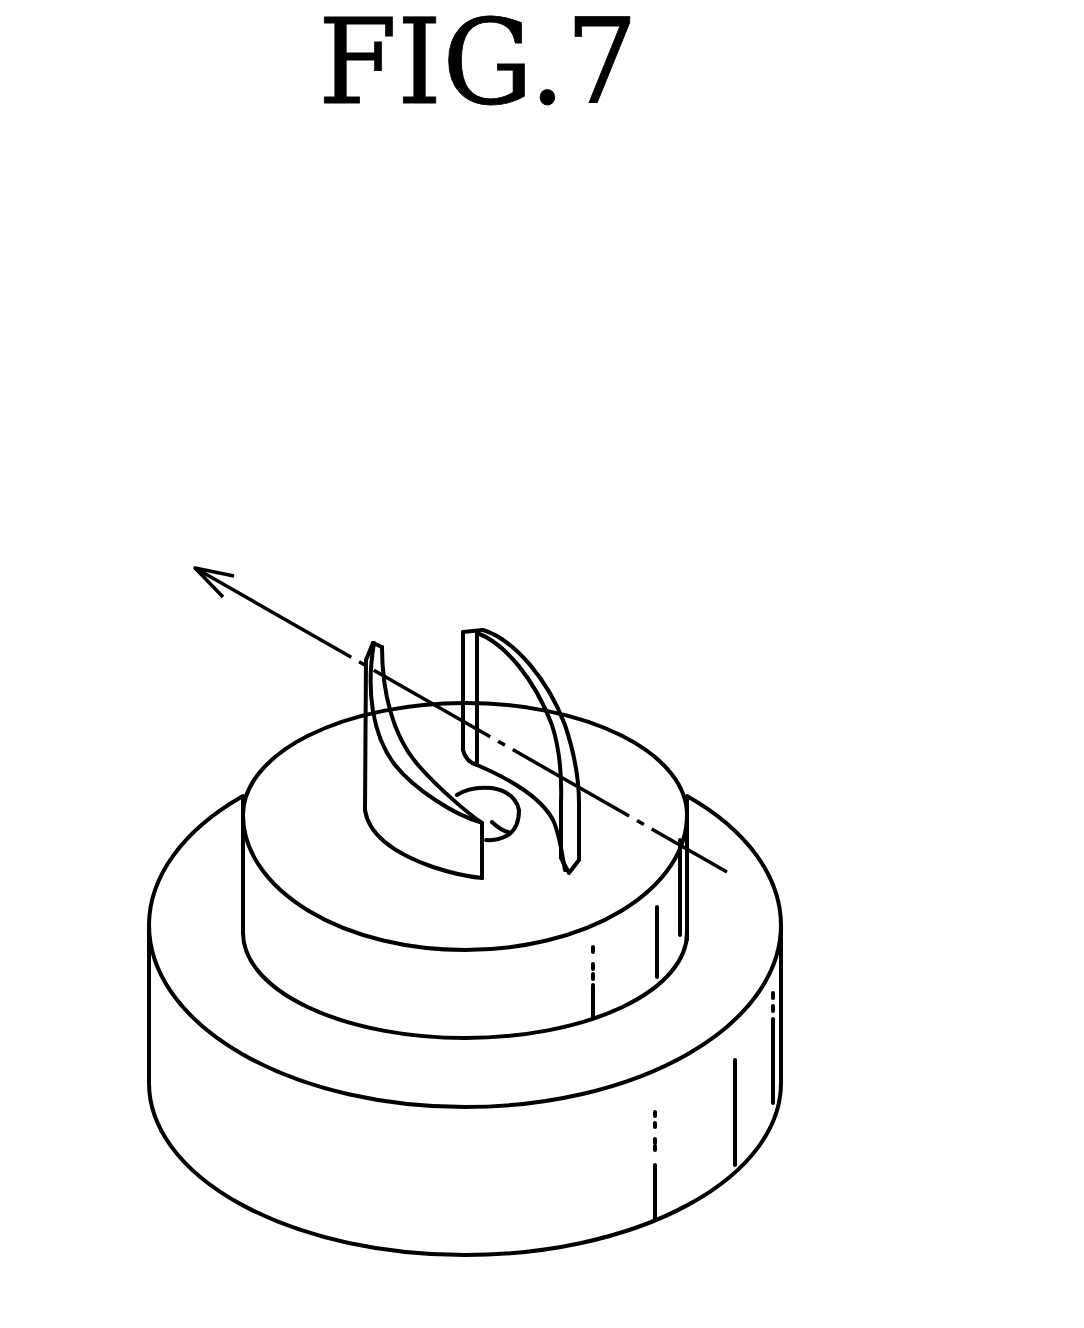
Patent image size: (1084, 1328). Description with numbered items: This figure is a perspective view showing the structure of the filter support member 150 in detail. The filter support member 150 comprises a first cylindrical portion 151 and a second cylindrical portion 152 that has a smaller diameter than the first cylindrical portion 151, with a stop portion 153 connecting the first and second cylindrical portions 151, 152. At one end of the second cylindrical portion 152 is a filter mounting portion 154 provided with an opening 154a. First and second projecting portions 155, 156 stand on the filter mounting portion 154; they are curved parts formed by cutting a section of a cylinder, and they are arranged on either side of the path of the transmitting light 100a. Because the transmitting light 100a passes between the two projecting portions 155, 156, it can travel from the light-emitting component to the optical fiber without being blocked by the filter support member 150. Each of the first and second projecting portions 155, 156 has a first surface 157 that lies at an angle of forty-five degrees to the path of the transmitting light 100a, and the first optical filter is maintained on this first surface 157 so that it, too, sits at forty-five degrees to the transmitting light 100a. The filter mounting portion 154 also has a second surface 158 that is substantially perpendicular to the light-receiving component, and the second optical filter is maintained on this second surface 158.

The transmitting light 100a is at (338, 522).
The filter support member 150 is at (508, 873).
The first cylindrical portion 151 is at (750, 1053).
The second cylindrical portion 152 is at (667, 915).
The stop portion 153 is at (753, 940).
The filter mounting portion 154 is at (285, 787).
The opening 154a is at (490, 877).
The first projecting portion 155 is at (376, 789).
The second projecting portion 156 is at (535, 665).
The first surface 157 is at (481, 628).
The second surface 158 is at (522, 832).